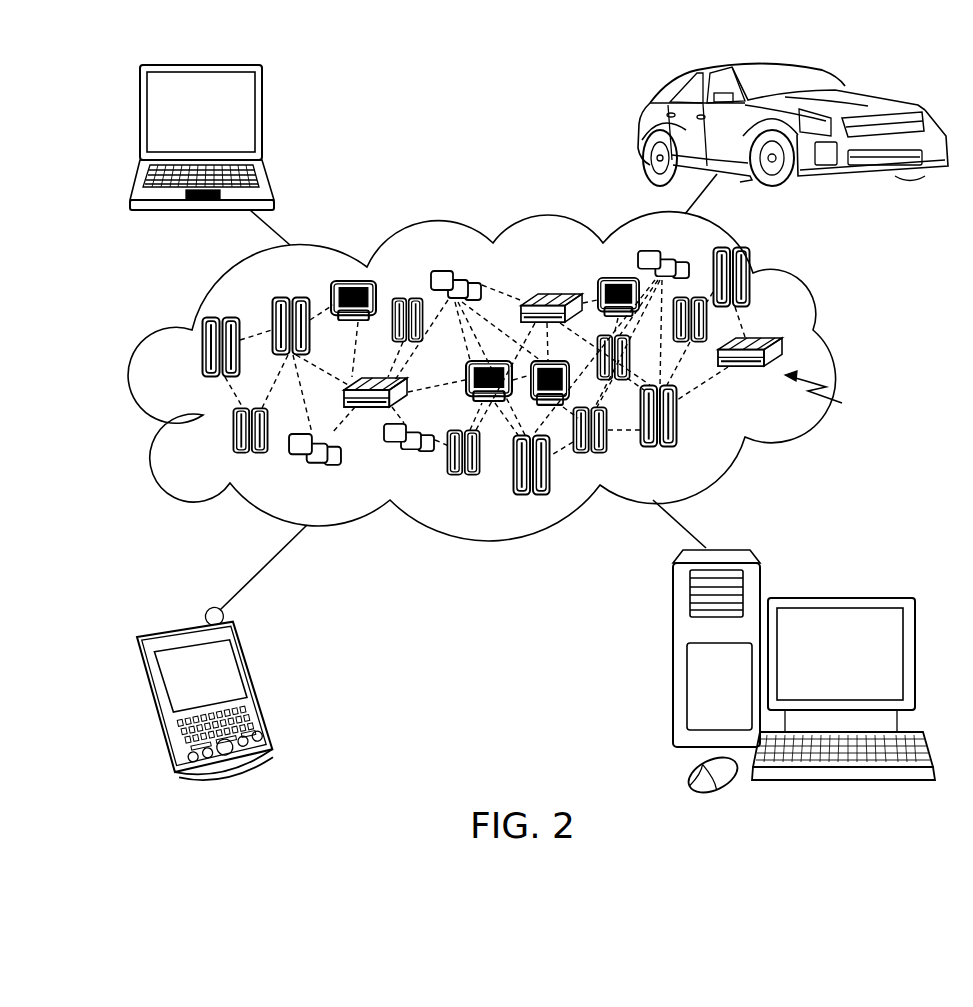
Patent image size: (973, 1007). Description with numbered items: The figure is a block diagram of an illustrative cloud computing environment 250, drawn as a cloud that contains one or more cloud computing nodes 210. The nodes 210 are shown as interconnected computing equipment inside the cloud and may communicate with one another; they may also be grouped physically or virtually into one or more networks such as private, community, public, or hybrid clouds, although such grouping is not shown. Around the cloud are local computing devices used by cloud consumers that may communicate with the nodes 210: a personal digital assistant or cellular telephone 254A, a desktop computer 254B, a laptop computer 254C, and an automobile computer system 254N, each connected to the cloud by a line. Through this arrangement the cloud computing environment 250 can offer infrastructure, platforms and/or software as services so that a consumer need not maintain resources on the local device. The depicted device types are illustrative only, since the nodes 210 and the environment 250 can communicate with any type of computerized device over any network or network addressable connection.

The cloud computing environment 250 is at (838, 353).
The cloud computing nodes 210 is at (844, 400).
The personal digital assistant or cellular telephone 254A is at (262, 684).
The desktop computer 254B is at (838, 598).
The laptop computer 254C is at (263, 120).
The automobile computer system 254N is at (640, 130).